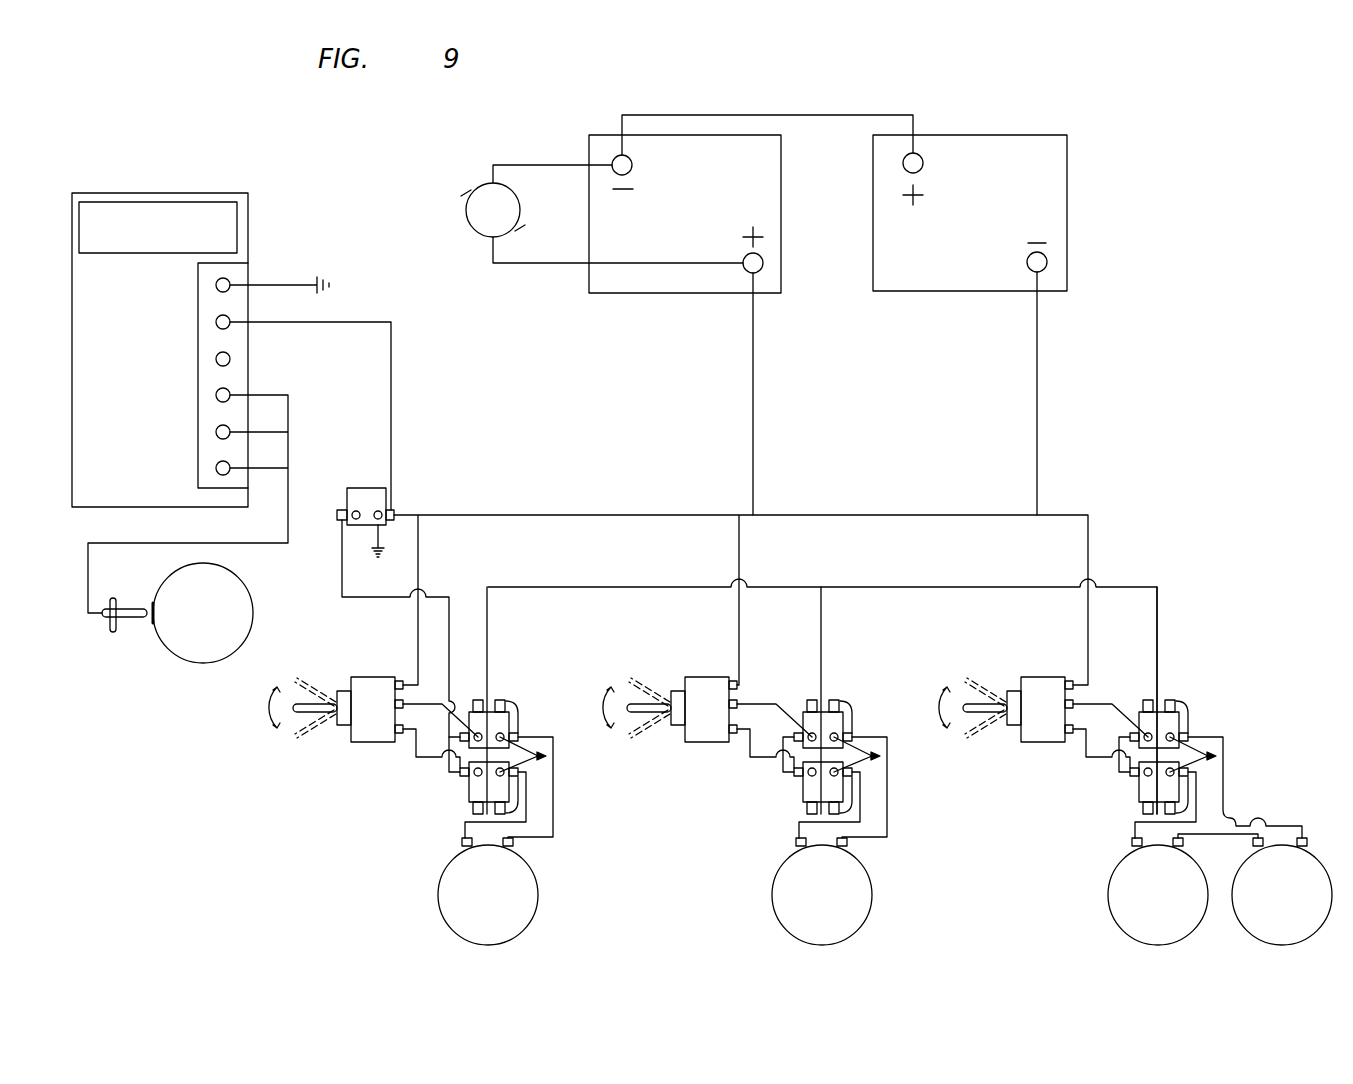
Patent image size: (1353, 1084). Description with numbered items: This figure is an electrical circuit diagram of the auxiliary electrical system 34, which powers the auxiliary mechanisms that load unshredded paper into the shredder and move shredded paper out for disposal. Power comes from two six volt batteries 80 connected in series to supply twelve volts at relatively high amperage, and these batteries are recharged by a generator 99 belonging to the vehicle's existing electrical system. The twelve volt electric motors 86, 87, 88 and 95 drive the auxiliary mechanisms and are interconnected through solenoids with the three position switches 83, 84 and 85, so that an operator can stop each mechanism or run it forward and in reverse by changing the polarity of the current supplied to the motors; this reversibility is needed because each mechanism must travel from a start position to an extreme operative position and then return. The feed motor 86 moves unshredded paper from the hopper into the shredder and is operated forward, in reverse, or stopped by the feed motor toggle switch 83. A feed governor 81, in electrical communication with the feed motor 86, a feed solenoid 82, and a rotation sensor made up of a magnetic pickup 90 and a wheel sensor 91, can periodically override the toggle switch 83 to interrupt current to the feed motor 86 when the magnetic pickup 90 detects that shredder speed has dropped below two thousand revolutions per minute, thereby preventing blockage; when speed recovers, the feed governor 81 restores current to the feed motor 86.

The auxiliary electrical system 34 is at (1050, 449).
The 6 volt battery 80 is at (638, 263).
The feed governor 81 is at (137, 287).
The feed solenoid 82 is at (360, 495).
The feed motor toggle switch 83 is at (373, 721).
The three position switch 84 is at (670, 733).
The three position switch 85 is at (1006, 733).
The feed motor 86 is at (455, 880).
The electric motor 87 is at (790, 891).
The electric motor 88 is at (1126, 891).
The magnetic pickup 90 is at (134, 617).
The wheel sensor 91 is at (235, 617).
The electric motor 95 is at (1267, 918).
The generator 99 is at (477, 215).